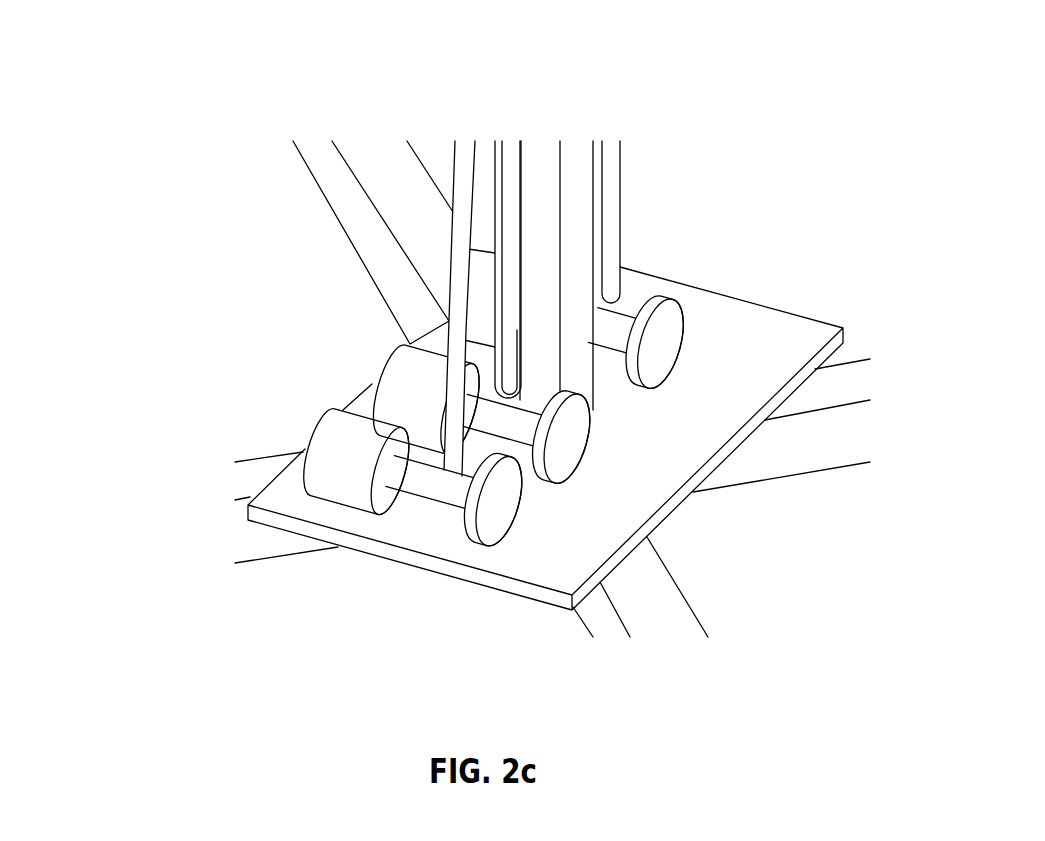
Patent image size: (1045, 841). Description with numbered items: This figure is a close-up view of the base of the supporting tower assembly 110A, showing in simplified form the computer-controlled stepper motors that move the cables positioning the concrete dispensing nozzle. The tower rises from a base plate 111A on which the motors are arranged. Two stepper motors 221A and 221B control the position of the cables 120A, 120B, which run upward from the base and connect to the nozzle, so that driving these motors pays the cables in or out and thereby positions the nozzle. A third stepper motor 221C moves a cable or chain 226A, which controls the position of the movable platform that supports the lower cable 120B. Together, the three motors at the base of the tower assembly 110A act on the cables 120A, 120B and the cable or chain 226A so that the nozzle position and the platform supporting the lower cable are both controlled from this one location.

The tower assembly 110A is at (577, 146).
The base plate 111A is at (413, 557).
The cable 120A is at (441, 313).
The cable 120B is at (491, 169).
The stepper motor 221A is at (313, 470).
The stepper motor 221B is at (375, 388).
The stepper motor 221C is at (682, 334).
The cable or chain 226A is at (632, 240).